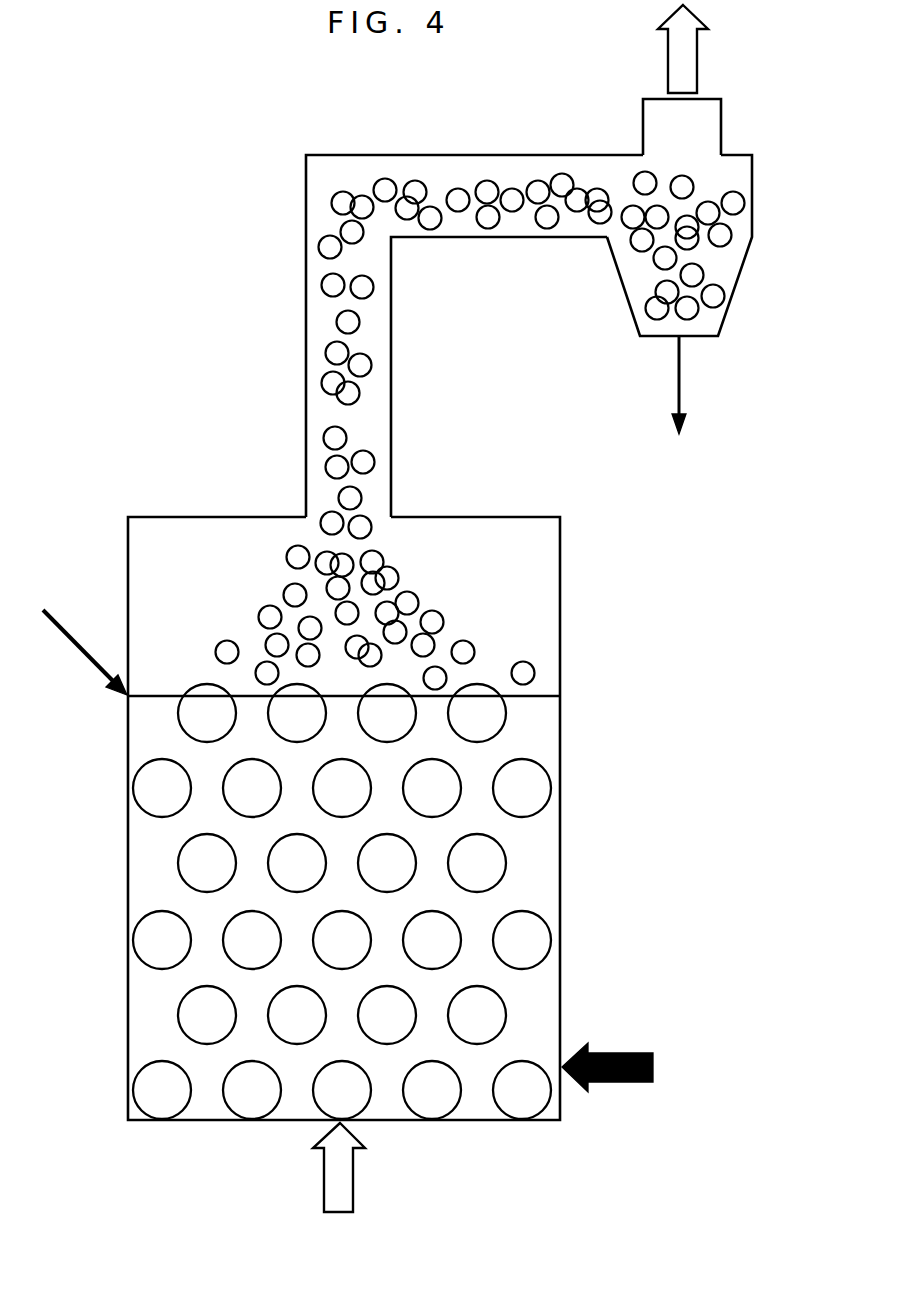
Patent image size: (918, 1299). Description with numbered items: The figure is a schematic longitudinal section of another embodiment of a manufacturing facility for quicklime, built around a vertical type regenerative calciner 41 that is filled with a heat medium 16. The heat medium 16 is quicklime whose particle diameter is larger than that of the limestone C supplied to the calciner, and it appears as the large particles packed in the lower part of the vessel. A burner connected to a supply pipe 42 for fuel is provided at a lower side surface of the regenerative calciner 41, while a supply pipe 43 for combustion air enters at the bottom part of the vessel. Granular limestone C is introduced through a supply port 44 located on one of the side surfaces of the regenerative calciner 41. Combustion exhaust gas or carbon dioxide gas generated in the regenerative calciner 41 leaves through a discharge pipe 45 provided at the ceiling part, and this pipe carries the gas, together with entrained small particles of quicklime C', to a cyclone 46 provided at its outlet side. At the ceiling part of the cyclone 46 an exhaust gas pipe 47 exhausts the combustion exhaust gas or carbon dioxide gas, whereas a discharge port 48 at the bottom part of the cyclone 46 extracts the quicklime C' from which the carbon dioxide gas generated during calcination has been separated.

The regenerative calciner 41 is at (560, 557).
The supply pipe 42 is at (636, 1052).
The supply pipe 43 is at (353, 1178).
The supply port 44 is at (127, 696).
The discharge pipe 45 is at (306, 347).
The cyclone 46 is at (752, 183).
The exhaust gas pipe 47 is at (722, 118).
The discharge port 48 is at (676, 338).
The heat medium 16 is at (152, 790).
The limestone C is at (358, 901).
The quicklime C' is at (500, 383).